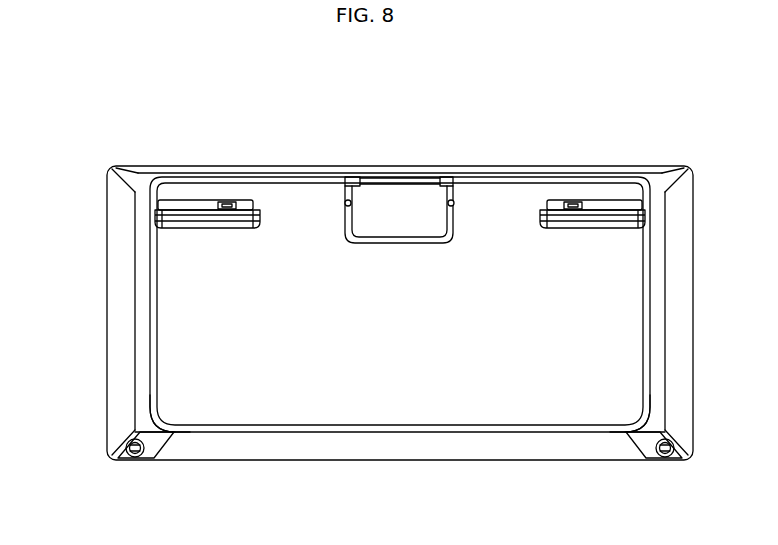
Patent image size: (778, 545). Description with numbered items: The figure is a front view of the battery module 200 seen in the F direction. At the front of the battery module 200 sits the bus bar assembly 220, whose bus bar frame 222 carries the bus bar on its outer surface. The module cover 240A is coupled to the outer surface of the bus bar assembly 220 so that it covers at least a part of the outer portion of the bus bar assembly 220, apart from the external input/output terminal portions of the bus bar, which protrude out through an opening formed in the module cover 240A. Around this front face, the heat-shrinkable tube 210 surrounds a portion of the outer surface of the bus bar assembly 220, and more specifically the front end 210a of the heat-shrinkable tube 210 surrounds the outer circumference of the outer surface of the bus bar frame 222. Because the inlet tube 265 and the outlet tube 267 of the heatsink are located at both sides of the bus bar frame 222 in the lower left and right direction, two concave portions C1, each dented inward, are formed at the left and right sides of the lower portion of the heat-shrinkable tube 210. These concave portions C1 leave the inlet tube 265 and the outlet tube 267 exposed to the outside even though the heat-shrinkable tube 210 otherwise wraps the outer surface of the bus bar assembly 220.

The battery module 200 is at (240, 88).
The heat-shrinkable tube 210 is at (183, 166).
The front end of heat-shrinkable tube 210a is at (135, 266).
The bus bar assembly 220 is at (66, 376).
The bus bar frame 222 is at (132, 432).
The module cover 240A is at (486, 203).
The inlet tube 265 is at (130, 462).
The outlet tube 267 is at (670, 462).
The concave portion C1 is at (158, 423).